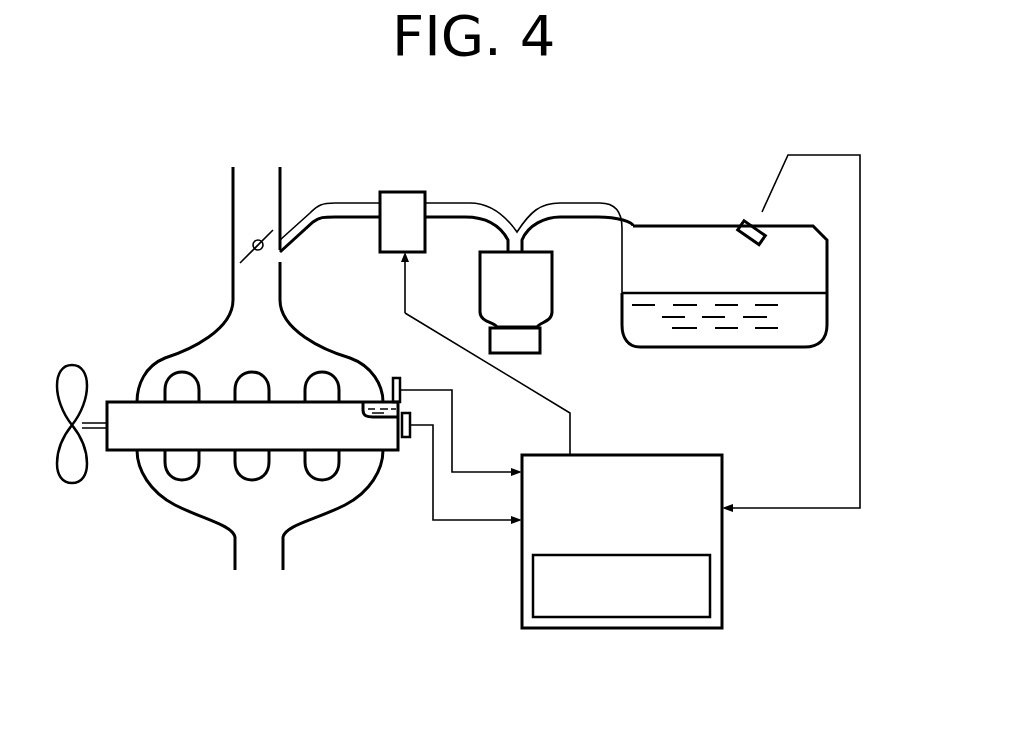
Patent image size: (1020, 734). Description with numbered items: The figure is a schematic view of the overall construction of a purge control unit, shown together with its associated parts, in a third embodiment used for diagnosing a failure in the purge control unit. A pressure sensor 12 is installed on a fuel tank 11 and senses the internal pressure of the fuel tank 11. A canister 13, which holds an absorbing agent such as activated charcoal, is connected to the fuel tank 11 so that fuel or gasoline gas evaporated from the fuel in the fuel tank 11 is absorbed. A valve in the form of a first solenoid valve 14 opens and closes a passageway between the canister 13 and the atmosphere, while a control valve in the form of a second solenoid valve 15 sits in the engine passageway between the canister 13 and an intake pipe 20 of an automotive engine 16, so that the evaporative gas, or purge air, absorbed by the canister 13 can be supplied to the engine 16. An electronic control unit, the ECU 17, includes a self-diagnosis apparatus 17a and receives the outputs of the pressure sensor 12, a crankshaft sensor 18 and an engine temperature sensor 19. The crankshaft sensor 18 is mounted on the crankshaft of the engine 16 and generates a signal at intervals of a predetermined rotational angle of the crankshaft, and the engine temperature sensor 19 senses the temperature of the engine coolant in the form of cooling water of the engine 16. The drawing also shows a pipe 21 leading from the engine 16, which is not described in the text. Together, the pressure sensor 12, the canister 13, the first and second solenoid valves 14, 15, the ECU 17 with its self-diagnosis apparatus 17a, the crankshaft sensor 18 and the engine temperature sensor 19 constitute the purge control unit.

The fuel tank 11 is at (743, 347).
The pressure sensor 12 is at (752, 218).
The canister 13 is at (552, 270).
The first solenoid valve 14 is at (540, 338).
The second solenoid valve 15 is at (417, 192).
The automotive engine 16 is at (119, 452).
The electronic control unit (ECU) 17 is at (622, 569).
The self-diagnosis apparatus 17a is at (630, 555).
The crankshaft sensor 18 is at (408, 440).
The engine temperature sensor 19 is at (393, 378).
The intake pipe 20 is at (233, 240).
The exhaust pipe 21 is at (235, 551).